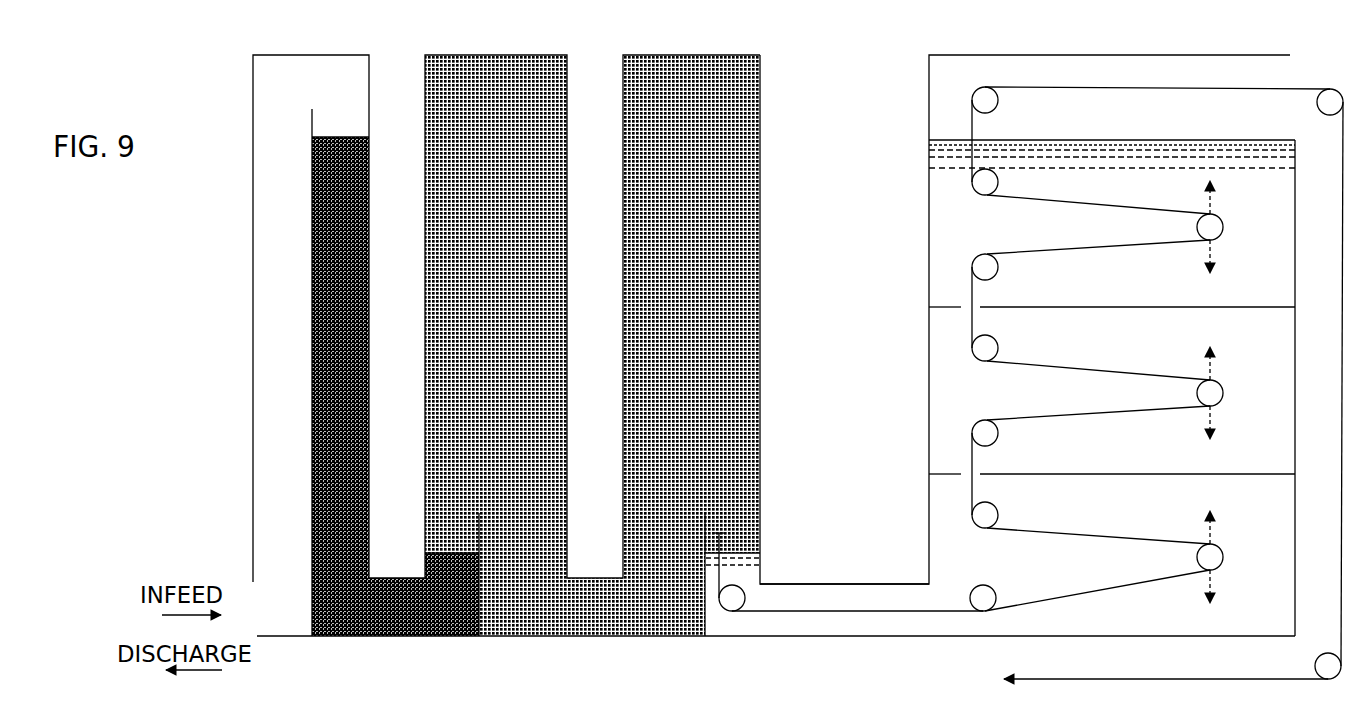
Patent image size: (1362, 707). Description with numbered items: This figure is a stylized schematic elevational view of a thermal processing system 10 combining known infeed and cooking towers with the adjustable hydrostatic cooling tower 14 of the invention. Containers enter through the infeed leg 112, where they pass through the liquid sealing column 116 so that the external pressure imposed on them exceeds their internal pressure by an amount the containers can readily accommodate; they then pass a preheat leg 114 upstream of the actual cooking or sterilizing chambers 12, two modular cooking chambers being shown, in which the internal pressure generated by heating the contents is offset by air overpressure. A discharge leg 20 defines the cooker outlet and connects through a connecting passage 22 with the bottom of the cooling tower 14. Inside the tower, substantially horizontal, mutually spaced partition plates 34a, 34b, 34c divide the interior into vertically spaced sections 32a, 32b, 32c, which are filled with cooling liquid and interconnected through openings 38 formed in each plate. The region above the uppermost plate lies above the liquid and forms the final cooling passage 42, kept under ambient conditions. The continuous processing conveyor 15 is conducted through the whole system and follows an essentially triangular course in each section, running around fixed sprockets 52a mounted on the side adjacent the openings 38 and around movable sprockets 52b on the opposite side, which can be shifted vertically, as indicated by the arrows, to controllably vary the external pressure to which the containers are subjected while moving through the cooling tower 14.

The thermal processing system 10 is at (874, 120).
The cooking or sterilizing chamber 12 is at (517, 57).
The hydrostatic cooling tower 14 is at (1162, 57).
The continuous processing conveyor 15 is at (847, 612).
The discharge leg 20 is at (742, 575).
The connecting passage 22 is at (810, 593).
The tower section 32a is at (1108, 512).
The tower section 32b is at (1108, 366).
The tower section 32c is at (1153, 302).
The partition plate 34a is at (1140, 478).
The partition plate 34b is at (1140, 310).
The uppermost partition plate 34c is at (1095, 140).
The openings 38 is at (968, 138).
The final cooling passage 42 is at (1037, 75).
The fixed sprockets 52a is at (998, 185).
The movable sprockets 52b is at (1233, 213).
The infeed leg 112 is at (268, 312).
The preheat leg 114 is at (350, 132).
The liquid sealing column 116 is at (352, 302).